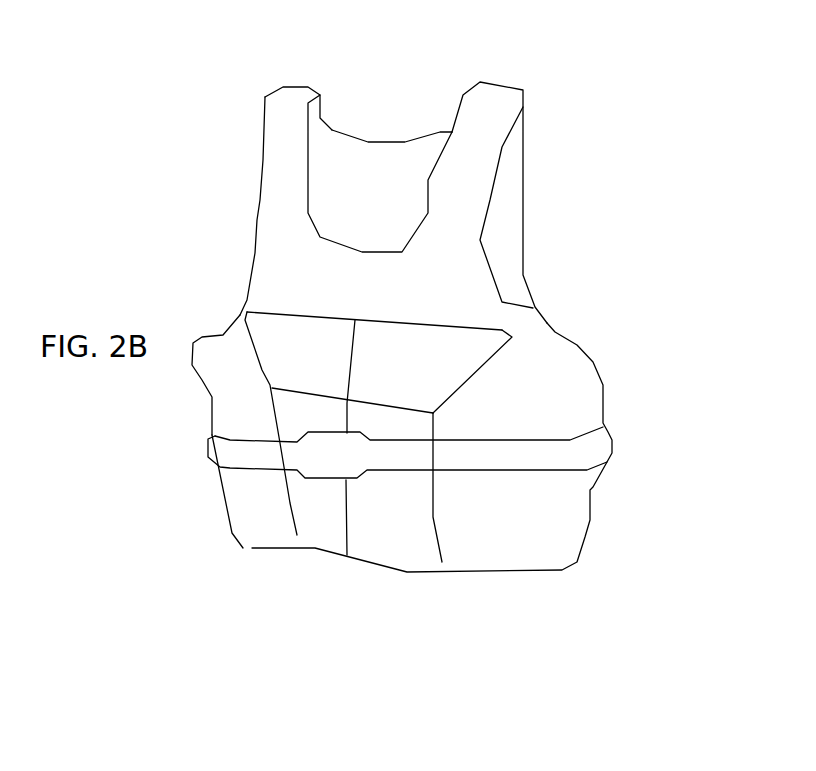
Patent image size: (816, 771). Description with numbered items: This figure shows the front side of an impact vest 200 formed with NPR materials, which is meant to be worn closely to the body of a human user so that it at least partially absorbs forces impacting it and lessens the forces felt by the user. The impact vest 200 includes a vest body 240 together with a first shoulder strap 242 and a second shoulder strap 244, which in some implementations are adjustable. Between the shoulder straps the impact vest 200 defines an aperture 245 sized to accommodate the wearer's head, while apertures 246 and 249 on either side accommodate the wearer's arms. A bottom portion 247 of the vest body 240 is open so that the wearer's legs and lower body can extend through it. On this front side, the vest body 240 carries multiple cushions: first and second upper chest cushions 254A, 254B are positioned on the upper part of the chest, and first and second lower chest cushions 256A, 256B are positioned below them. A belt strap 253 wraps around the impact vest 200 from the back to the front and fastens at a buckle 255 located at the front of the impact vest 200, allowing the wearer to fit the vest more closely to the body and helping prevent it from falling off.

The impact vest 200 is at (150, 105).
The bottom portion 247 is at (122, 7).
The vest body 240 is at (555, 380).
The first shoulder strap 242 is at (480, 82).
The second shoulder strap 244 is at (283, 87).
The aperture 245 is at (368, 158).
The aperture 246 is at (502, 205).
The aperture 249 is at (255, 253).
The belt strap 253 is at (552, 450).
The first upper chest cushion 254A is at (277, 330).
The second upper chest cushion 254B is at (438, 353).
The buckle 255 is at (328, 457).
The first lower chest cushion 256A is at (328, 542).
The second lower chest cushion 256B is at (395, 537).